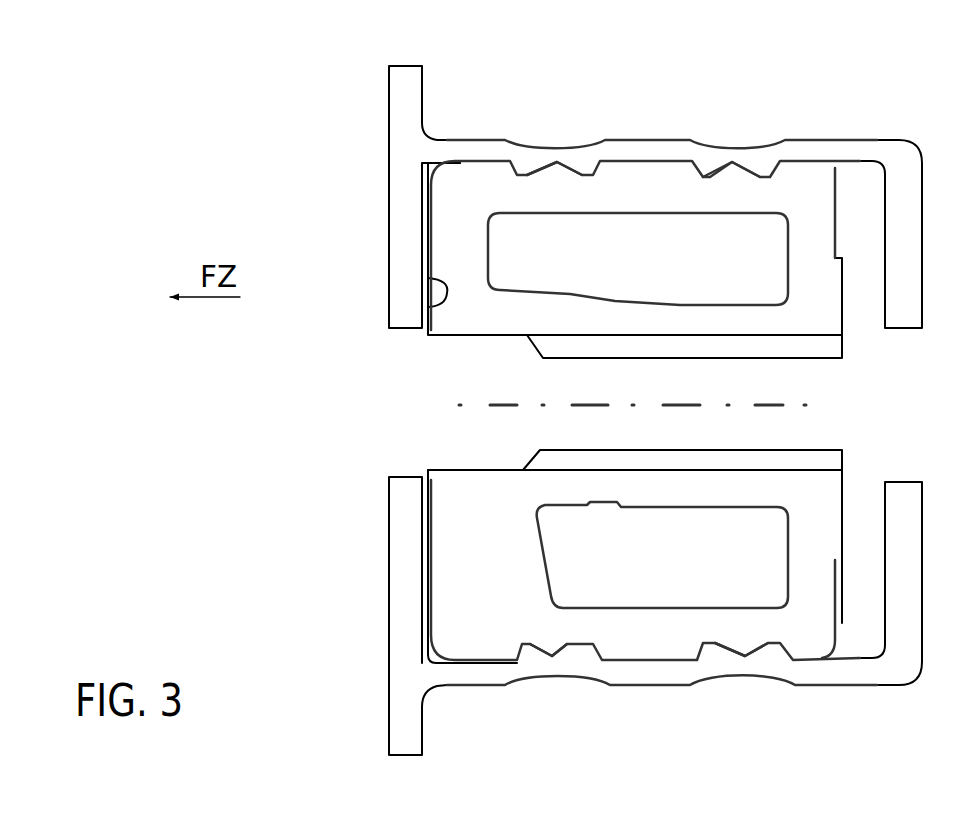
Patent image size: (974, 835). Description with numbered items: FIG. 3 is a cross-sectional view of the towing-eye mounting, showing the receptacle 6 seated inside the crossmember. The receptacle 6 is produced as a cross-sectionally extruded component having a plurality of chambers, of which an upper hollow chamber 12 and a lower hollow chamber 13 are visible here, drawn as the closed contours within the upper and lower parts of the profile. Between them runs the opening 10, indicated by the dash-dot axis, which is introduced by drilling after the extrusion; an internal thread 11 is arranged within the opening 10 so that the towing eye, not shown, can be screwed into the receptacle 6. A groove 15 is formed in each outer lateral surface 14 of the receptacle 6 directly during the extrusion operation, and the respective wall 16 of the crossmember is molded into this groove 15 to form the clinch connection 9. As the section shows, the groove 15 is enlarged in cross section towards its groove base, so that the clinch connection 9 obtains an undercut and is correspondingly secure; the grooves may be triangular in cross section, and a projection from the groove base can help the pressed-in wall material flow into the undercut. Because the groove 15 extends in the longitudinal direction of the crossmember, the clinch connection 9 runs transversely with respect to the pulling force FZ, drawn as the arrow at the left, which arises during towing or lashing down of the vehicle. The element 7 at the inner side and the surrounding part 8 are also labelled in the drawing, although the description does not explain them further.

The receptacle 6 is at (447, 588).
The seal 7 is at (427, 290).
The first housing part 8 is at (397, 249).
The clinch connection 9 is at (732, 147).
The opening 10 is at (414, 422).
The internal thread 11 is at (803, 463).
The upper hollow chamber 12 is at (606, 240).
The lower hollow chamber 13 is at (657, 583).
The outer lateral surface 14 is at (652, 157).
The groove 15 is at (557, 167).
The wall 16 is at (453, 150).